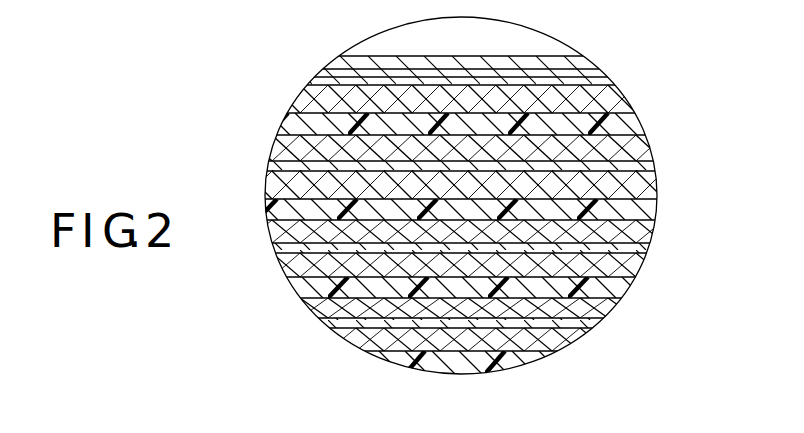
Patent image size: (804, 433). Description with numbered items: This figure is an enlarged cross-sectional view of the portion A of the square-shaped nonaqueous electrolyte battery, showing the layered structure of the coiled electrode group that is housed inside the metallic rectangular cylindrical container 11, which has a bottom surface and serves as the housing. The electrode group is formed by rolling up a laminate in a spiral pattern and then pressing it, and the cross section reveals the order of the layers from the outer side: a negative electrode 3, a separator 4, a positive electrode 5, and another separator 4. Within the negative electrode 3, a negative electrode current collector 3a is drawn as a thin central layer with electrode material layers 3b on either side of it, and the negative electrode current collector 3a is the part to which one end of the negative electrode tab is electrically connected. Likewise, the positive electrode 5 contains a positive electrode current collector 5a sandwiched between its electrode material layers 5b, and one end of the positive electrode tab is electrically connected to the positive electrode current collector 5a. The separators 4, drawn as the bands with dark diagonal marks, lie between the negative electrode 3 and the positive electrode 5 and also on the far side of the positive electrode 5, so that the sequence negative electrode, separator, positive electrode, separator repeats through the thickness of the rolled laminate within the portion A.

The portion A is at (371, 47).
The container 11 is at (594, 58).
The negative electrode 3 is at (698, 32).
The negative electrode current collector 3a is at (607, 80).
The fiber sheet of first fiber-reinforced layer 3b is at (625, 98).
The separator 4 is at (281, 125).
The positive electrode 5 is at (730, 110).
The positive electrode current collector 5a is at (633, 172).
The fiber sheet of second fiber-reinforced layer 5b is at (633, 143).